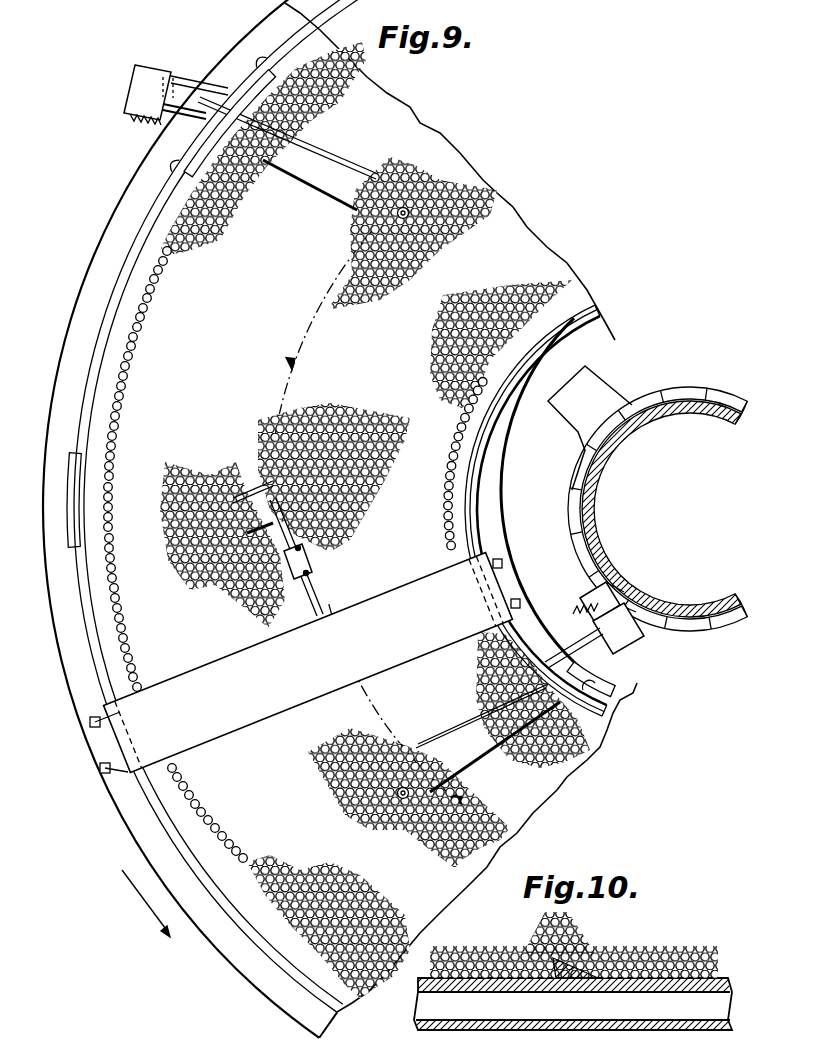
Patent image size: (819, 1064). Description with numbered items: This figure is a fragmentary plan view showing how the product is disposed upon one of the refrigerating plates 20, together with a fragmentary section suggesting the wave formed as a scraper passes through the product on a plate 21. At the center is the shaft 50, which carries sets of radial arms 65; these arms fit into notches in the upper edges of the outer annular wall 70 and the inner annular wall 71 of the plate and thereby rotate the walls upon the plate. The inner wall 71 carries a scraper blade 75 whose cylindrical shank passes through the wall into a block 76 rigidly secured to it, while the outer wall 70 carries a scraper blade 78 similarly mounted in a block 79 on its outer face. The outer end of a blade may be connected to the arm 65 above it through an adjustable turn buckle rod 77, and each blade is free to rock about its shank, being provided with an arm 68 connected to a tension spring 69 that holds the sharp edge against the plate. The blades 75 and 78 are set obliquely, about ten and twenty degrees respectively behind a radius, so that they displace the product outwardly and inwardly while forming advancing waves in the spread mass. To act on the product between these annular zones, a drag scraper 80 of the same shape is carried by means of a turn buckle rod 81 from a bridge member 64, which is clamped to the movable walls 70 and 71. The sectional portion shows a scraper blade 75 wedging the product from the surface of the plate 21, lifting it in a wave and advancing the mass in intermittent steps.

In FIG. 9, the refrigerating plate 20 is at (493, 500).
In FIG. 10, the refrigerating plate 21 is at (712, 990).
In FIG. 9, the shaft 50 is at (617, 577).
In FIG. 9, the bridge member 64 is at (128, 704).
In FIG. 9, the radial arm 65 is at (603, 397).
In FIG. 9, the arm 68 is at (135, 90).
In FIG. 9, the tension spring 69 is at (145, 121).
In FIG. 9, the outer annular wall 70 is at (147, 790).
In FIG. 9, the inner annular wall 71 is at (577, 323).
In FIG. 9, the scraper blade 75 is at (480, 747).
In FIG. 10, the scraper blade 75 is at (583, 960).
In FIG. 9, the block 76 is at (603, 678).
In FIG. 9, the turn buckle rod 77 is at (412, 222).
In FIG. 9, the scraper blade 78 is at (337, 187).
In FIG. 9, the block 79 is at (232, 84).
In FIG. 9, the drag scraper 80 is at (252, 507).
In FIG. 9, the turn buckle rod 81 is at (307, 563).